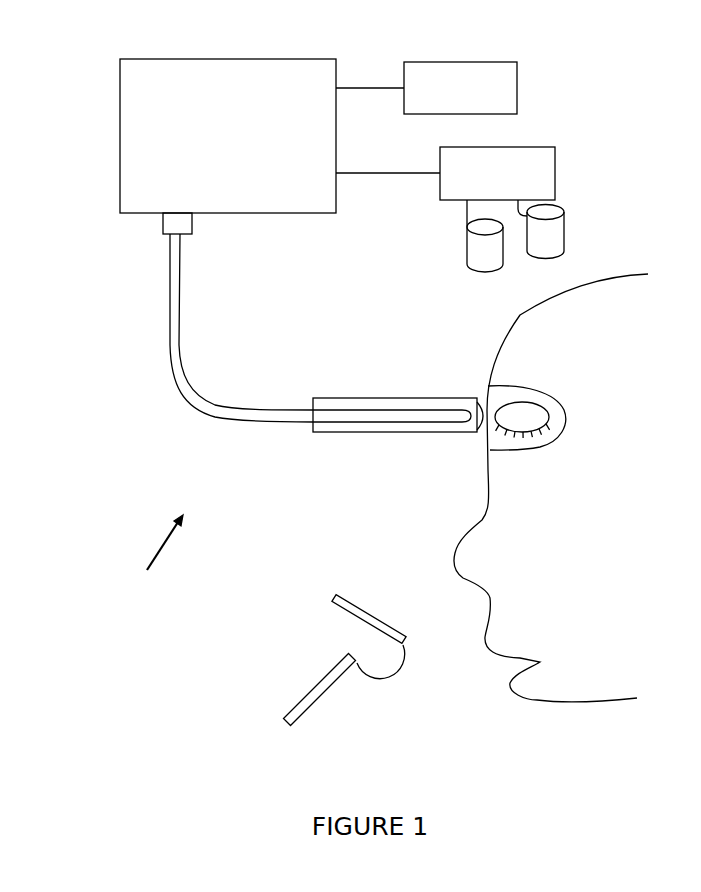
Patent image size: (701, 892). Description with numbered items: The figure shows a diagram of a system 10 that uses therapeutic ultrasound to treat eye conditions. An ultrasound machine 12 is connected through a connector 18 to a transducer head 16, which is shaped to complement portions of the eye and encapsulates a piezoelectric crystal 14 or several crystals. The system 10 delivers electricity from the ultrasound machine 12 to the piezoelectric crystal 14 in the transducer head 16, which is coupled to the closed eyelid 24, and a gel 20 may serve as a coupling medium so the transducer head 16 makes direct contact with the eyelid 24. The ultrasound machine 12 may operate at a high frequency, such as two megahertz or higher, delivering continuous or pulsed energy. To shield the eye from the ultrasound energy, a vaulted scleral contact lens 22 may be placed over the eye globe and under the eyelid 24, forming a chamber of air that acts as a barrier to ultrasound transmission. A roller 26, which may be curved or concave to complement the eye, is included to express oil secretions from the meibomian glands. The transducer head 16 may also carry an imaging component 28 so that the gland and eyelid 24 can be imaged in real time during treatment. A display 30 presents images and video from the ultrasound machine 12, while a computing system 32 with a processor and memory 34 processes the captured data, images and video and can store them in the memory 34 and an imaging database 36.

The system 10 is at (155, 556).
The ultrasound machine 12 is at (120, 146).
The piezoelectric crystal 14 is at (333, 416).
The transducer head 16 is at (385, 436).
The connector 18 is at (182, 400).
The gel 20 is at (532, 450).
The vaulted scleral contact lens 22 is at (518, 407).
The eyelid 24 is at (553, 437).
The roller 26 is at (397, 673).
The imaging component 28 is at (480, 402).
The display 30 is at (517, 76).
The computing system 32 is at (556, 164).
The memory 34 is at (566, 224).
The imaging database 36 is at (466, 230).